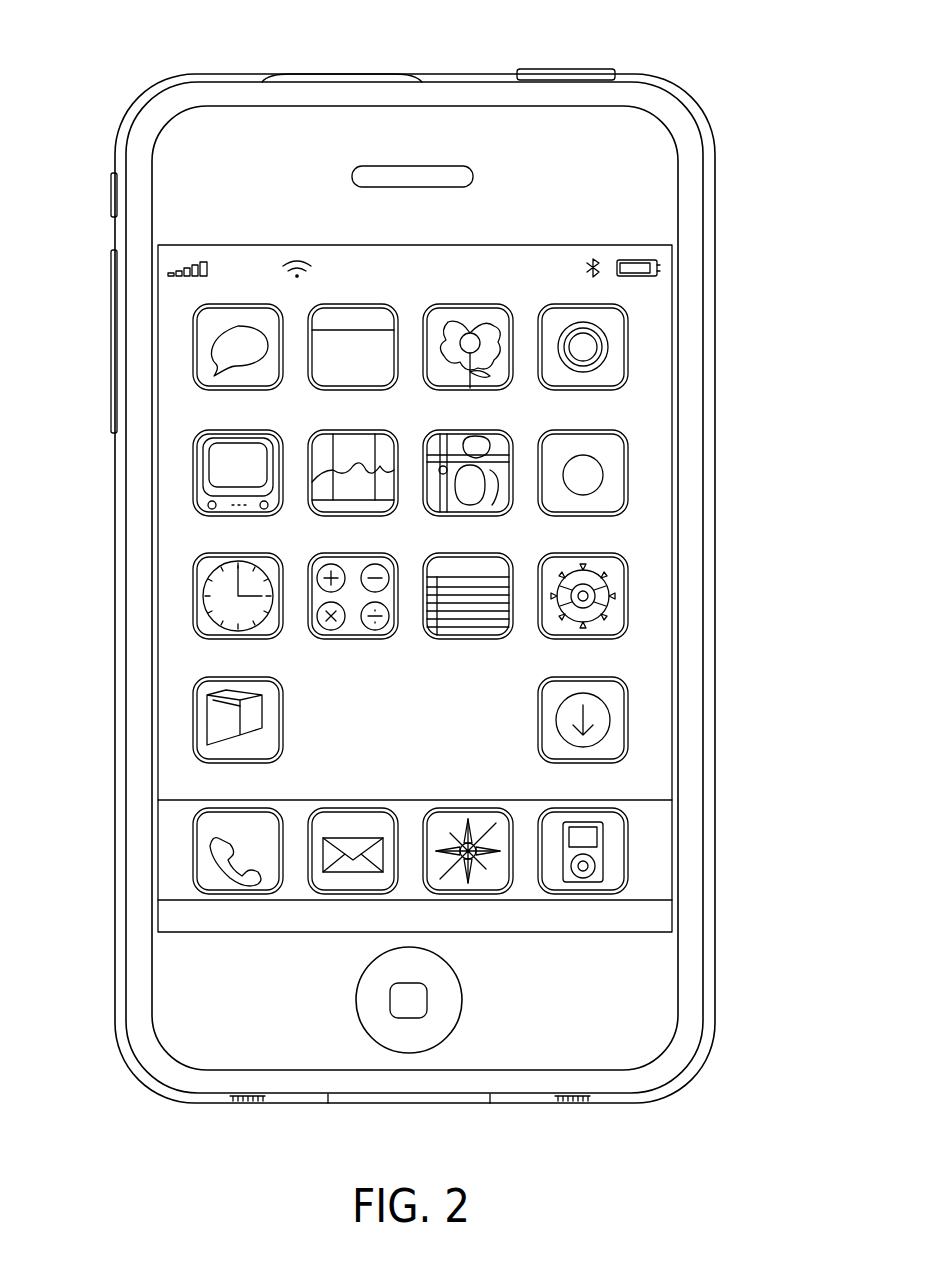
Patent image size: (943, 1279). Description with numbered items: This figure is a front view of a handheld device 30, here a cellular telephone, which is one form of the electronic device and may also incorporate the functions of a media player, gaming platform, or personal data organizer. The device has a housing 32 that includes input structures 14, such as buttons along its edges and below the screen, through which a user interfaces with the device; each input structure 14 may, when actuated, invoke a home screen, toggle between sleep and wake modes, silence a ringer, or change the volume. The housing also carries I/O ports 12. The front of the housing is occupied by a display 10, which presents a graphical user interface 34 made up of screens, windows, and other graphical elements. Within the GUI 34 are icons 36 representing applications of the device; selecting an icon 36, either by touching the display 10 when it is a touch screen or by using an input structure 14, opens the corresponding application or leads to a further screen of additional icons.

The handheld device 30 is at (145, 46).
The display 10 is at (690, 468).
The I/O ports 12 is at (260, 75).
The input structures 14 is at (565, 70).
The housing 32 is at (720, 242).
The graphical user interface 34 is at (175, 556).
The icons 36 is at (468, 308).